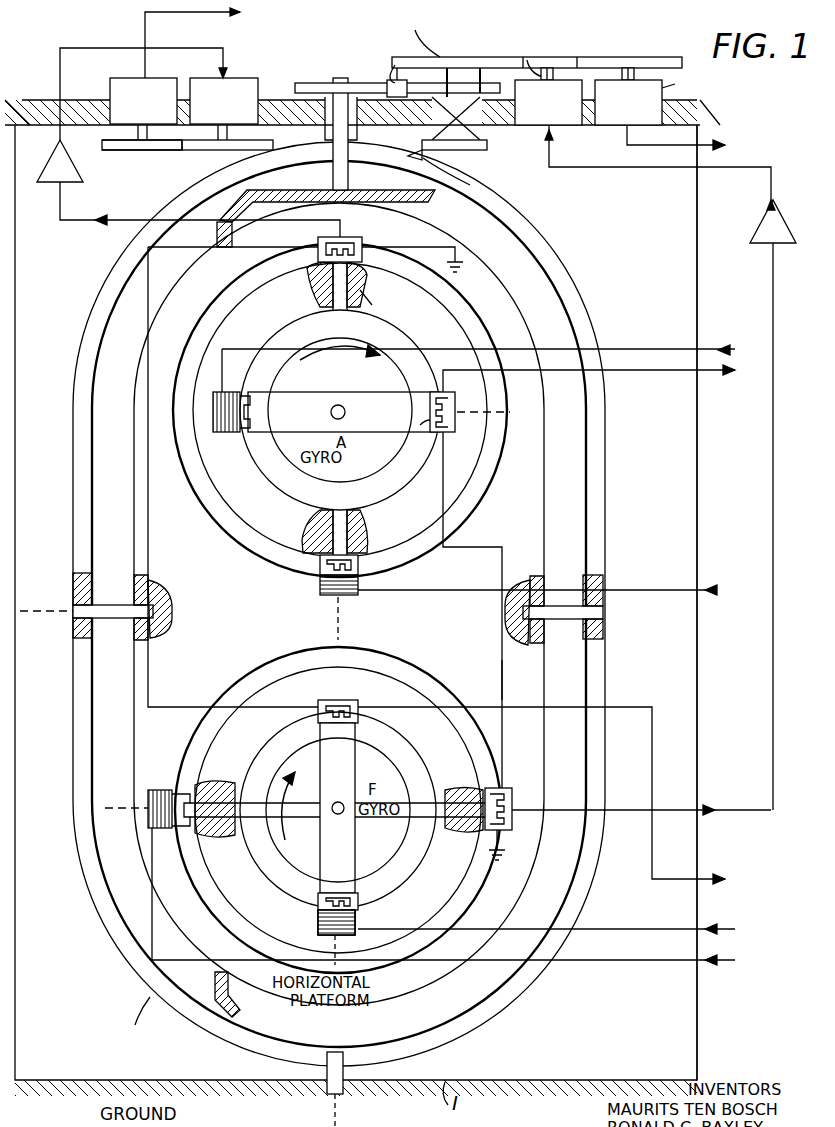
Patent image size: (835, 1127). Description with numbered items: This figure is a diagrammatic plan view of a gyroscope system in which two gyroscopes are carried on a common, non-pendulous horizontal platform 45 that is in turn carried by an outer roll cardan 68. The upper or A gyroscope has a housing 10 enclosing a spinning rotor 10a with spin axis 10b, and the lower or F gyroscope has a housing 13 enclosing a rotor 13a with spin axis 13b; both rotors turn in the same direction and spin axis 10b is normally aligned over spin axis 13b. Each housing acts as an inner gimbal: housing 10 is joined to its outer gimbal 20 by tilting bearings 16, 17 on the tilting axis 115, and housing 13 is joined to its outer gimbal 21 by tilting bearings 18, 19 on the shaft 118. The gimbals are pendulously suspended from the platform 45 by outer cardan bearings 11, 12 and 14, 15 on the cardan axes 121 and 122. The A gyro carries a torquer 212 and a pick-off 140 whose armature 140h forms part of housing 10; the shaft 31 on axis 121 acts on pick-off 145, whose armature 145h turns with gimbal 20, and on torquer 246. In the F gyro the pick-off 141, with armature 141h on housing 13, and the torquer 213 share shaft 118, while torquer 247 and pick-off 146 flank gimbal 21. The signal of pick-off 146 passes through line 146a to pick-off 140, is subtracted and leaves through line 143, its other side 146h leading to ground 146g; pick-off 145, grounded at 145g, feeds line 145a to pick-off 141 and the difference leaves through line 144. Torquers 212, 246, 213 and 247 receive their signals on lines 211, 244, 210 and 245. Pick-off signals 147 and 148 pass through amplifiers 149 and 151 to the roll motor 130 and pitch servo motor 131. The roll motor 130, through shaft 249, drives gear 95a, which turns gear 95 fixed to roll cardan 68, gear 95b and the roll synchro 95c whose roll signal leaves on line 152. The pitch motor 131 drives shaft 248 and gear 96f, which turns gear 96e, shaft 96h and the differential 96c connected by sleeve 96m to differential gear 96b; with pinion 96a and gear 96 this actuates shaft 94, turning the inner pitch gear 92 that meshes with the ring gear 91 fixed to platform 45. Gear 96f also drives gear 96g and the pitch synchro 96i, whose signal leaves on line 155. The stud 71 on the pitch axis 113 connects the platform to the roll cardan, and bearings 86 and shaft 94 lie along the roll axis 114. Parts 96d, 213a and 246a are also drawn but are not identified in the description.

The A gyroscope housing 10 is at (285, 395).
The spinning rotor 10a is at (352, 344).
The spin axis 10b is at (345, 412).
The outer cardan bearing 11 is at (310, 253).
The outer cardan bearing 12 is at (385, 530).
The F gyroscope housing 13 is at (356, 840).
The spinning rotor 13a is at (405, 845).
The spin axis 13b is at (338, 802).
The outer gimbal bearing 14 is at (383, 733).
The outer gimbal bearing 15 is at (183, 778).
The tilting bearing 16 is at (410, 460).
The tilting bearing 17 is at (248, 380).
The tilting bearing 18 is at (305, 895).
The tilting bearing 19 is at (358, 694).
The outer gimbal 20 is at (455, 338).
The outer gimbal 21 is at (412, 690).
The shaft 31 is at (339, 305).
The platform 45 is at (179, 901).
The roll cardan 68 is at (470, 1020).
The shaft or stud 71 is at (103, 606).
The bearing 86 is at (340, 1058).
The pitch axis ring gear 91 is at (214, 235).
The inner pitch gear 92 is at (252, 205).
The shaft 94 is at (333, 80).
The gear 95 is at (425, 160).
The gear 95a is at (185, 155).
The gear 95b is at (115, 152).
The roll synchro 95c is at (155, 78).
The pitch gear 96 is at (355, 83).
The pinion 96a is at (390, 80).
The differential gear 96b is at (480, 83).
The differential 96c is at (478, 140).
The lever arm 96d is at (487, 172).
The gear 96e is at (403, 64).
The gear 96f is at (530, 58).
The gear 96g is at (630, 64).
The shaft 96h is at (448, 66).
The pitch synchro 96i is at (622, 81).
The sleeve 96m is at (425, 31).
The pitch axis 113 is at (32, 610).
The roll axis 114 is at (345, 1102).
The tilting axis 115 is at (498, 414).
The tilting axis shaft 118 is at (318, 722).
The outer cardan axis 121 is at (335, 608).
The outer cardan axis 122 is at (98, 803).
The roll servo motor 130 is at (240, 78).
The pitch servo motor 131 is at (558, 135).
The pick-off 140 is at (456, 425).
The armature 140h is at (428, 422).
The pick-off 141 is at (318, 705).
The armature 141h is at (335, 733).
The output line 143 is at (690, 372).
The output line 144 is at (700, 878).
The pick-off 145 is at (365, 245).
The line 145a is at (148, 500).
The ground 145g is at (462, 252).
The armature 145h is at (389, 303).
The pick-off 146 is at (510, 790).
The line 146a is at (500, 660).
The ground 146g is at (516, 853).
The armature 146h is at (483, 832).
The electrical information line 147 is at (70, 224).
The line 148 is at (738, 814).
The amplifier 149 is at (52, 178).
The amplifier 151 is at (757, 230).
The line 152 is at (186, 24).
The line 155 is at (715, 150).
The line 210 is at (707, 930).
The line 211 is at (712, 348).
The torquer 212 is at (215, 435).
The torquer 213 is at (357, 915).
The gyro F torquer pickoff 213a is at (333, 893).
The line 244 is at (712, 588).
The line 245 is at (716, 965).
The torquer 246 is at (345, 597).
The gyro A caging pickoff 246a is at (320, 568).
The torquer 247 is at (152, 792).
The shaft 248 is at (553, 72).
The roll axis shaft 249 is at (222, 142).